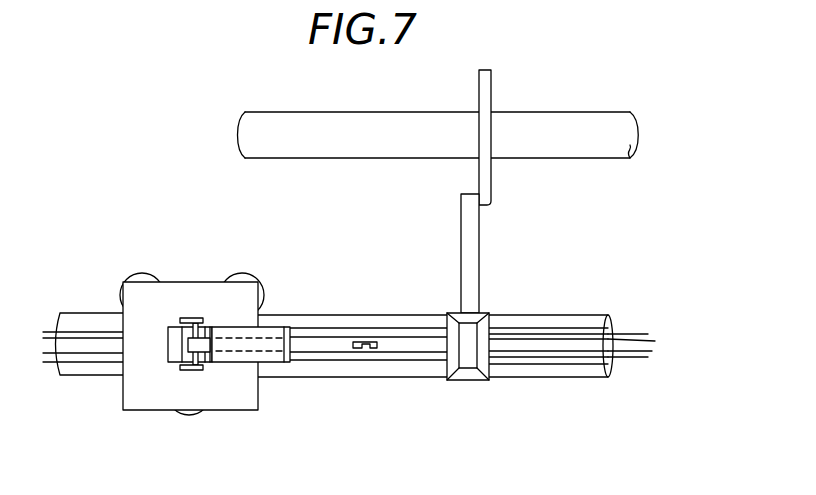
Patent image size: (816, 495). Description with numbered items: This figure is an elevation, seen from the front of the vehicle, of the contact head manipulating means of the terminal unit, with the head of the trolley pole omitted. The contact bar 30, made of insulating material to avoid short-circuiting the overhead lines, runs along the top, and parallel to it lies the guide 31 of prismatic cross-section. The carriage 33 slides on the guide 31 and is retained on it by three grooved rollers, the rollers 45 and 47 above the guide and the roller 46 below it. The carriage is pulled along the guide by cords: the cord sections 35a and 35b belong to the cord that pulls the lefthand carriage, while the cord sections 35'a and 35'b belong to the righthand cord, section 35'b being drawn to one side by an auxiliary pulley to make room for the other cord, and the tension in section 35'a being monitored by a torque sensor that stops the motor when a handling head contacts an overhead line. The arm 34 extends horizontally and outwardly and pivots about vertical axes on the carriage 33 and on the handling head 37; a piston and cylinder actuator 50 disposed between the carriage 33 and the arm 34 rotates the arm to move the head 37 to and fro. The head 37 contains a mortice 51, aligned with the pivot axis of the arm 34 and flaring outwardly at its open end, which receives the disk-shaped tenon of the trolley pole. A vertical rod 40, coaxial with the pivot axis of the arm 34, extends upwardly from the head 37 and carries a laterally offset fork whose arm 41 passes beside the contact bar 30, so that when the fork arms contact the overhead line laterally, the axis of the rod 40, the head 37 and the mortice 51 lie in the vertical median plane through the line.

The contact bar 30 is at (601, 111).
The guide 31 is at (354, 380).
The carriage 33 is at (143, 396).
The arm 34 is at (403, 346).
The cord section 35a is at (648, 334).
The cord section 35b is at (655, 341).
The cord section 35'a is at (653, 387).
The cord section 35'b is at (671, 367).
The handling head 37 is at (494, 286).
The vertical rod 40 is at (477, 238).
The fork arm 41 is at (486, 82).
The grooved roller 45 is at (245, 273).
The grooved roller 46 is at (196, 414).
The grooved roller 47 is at (148, 273).
The piston and cylinder actuator 50 is at (272, 332).
The mortice 51 is at (469, 363).